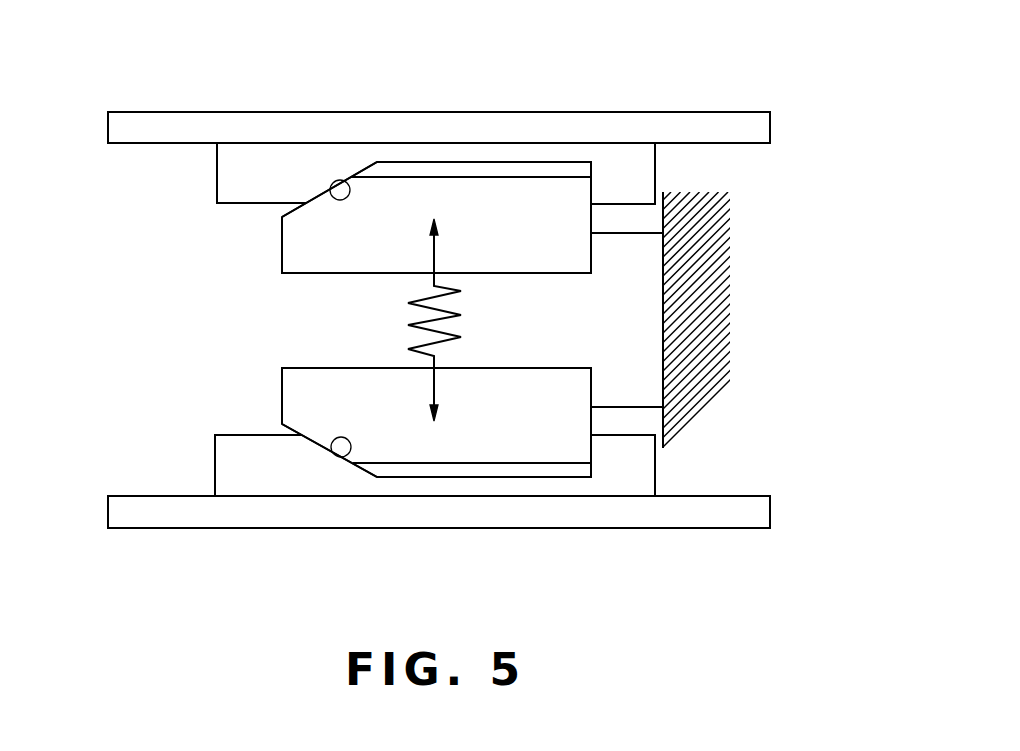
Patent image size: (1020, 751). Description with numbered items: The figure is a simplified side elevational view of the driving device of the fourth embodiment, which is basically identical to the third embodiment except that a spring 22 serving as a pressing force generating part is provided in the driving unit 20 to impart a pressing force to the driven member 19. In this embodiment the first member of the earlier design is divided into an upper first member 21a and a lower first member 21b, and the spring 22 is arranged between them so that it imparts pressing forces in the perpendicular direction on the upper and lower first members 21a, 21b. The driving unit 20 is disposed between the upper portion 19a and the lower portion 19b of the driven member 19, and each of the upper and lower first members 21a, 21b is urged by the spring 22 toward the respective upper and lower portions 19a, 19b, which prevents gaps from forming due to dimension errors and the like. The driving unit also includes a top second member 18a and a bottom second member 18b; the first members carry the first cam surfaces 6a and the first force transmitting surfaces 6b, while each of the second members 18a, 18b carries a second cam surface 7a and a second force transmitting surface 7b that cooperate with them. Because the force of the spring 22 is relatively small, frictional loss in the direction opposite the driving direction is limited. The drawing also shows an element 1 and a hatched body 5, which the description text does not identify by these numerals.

The driven body 1 is at (602, 306).
The base 5 is at (661, 212).
The first cam surface 6a is at (320, 192).
The first force transmitting surface 6b is at (591, 187).
The second cam surface 7a is at (332, 182).
The second force transmitting surface 7b is at (600, 190).
The top second member 18a is at (228, 173).
The bottom second member 18b is at (230, 472).
The driven member 19 is at (439, 323).
The upper portion 19a is at (508, 132).
The lower portion 19b is at (525, 515).
The driving unit 20 is at (379, 326).
The upper first member 21a is at (315, 262).
The lower first member 21b is at (315, 377).
The spring 22 is at (420, 320).